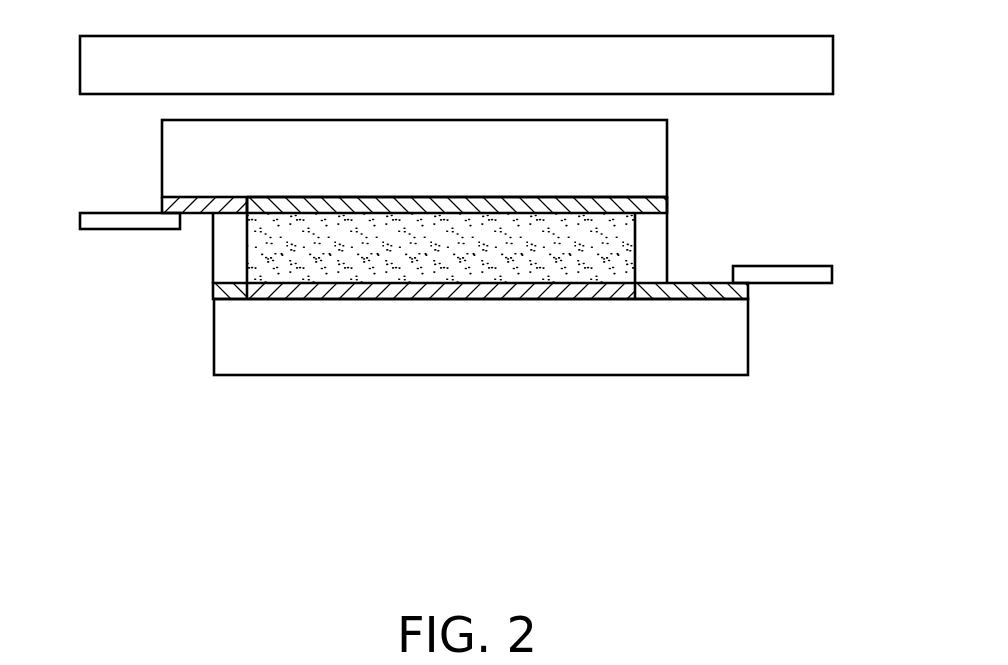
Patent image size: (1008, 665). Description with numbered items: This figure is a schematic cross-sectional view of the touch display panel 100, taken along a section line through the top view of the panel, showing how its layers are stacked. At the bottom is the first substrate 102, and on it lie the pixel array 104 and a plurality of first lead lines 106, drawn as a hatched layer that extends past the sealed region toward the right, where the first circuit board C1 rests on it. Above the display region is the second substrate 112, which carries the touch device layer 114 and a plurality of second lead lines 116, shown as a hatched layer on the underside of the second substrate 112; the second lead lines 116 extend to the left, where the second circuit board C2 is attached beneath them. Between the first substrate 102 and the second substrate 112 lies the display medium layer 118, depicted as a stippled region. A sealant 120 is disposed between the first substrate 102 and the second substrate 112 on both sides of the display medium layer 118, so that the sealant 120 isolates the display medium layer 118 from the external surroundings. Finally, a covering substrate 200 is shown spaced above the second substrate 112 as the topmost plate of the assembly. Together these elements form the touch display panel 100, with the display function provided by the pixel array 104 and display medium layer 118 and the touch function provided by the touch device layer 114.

The touch display panel 100 is at (872, 433).
The first substrate 102 is at (748, 337).
The pixel array 104 is at (216, 291).
The first lead lines 106 is at (705, 290).
The second substrate 112 is at (667, 170).
The touch device layer 114 is at (668, 206).
The second lead lines 116 is at (185, 205).
The display medium layer 118 is at (557, 270).
The sealant 120 is at (213, 258).
The covering substrate 200 is at (833, 62).
The first circuit board C1 is at (832, 275).
The second circuit board C2 is at (82, 222).